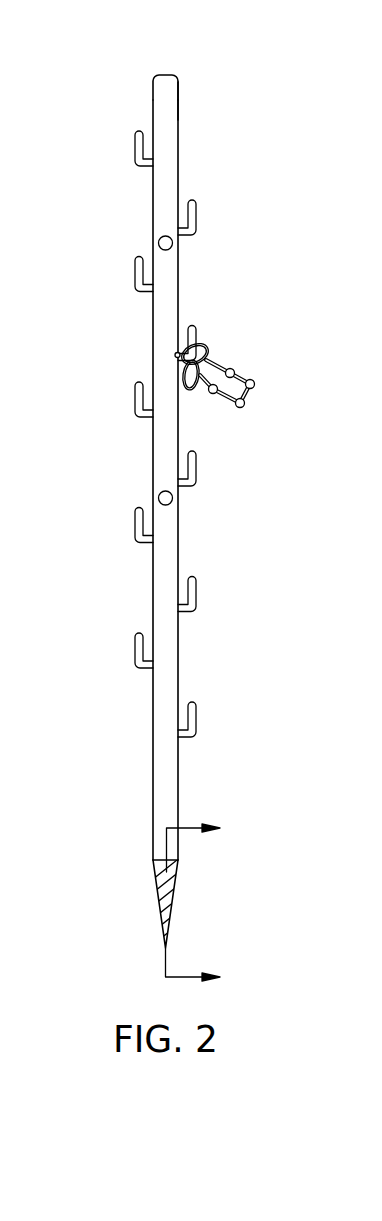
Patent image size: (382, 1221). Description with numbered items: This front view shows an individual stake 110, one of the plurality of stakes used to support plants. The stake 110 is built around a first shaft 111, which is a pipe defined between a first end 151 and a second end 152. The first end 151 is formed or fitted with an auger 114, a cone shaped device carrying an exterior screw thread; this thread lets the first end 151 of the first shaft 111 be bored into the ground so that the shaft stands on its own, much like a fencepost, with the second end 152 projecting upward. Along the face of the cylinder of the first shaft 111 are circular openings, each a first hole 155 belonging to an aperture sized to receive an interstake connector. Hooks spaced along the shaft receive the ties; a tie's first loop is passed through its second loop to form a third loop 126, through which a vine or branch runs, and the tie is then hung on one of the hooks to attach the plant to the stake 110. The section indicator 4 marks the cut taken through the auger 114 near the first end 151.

The individual stake 110 is at (178, 439).
The first shaft 111 is at (170, 97).
The second end 152 is at (166, 74).
The first hole 155 is at (172, 243).
The third loop 126 is at (246, 375).
The first end 151 is at (158, 903).
The auger 114 is at (174, 898).
The section line 4- 4 is at (205, 906).